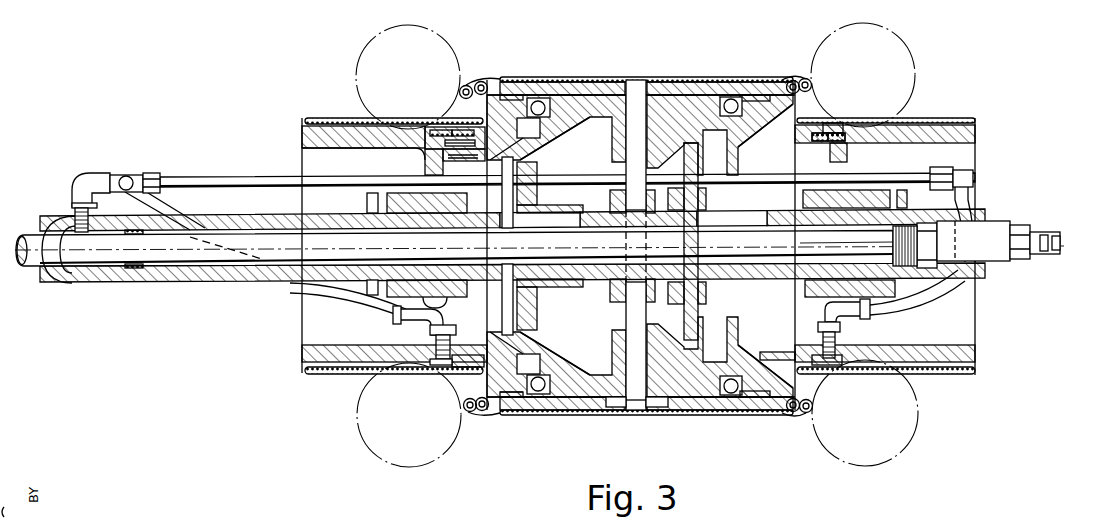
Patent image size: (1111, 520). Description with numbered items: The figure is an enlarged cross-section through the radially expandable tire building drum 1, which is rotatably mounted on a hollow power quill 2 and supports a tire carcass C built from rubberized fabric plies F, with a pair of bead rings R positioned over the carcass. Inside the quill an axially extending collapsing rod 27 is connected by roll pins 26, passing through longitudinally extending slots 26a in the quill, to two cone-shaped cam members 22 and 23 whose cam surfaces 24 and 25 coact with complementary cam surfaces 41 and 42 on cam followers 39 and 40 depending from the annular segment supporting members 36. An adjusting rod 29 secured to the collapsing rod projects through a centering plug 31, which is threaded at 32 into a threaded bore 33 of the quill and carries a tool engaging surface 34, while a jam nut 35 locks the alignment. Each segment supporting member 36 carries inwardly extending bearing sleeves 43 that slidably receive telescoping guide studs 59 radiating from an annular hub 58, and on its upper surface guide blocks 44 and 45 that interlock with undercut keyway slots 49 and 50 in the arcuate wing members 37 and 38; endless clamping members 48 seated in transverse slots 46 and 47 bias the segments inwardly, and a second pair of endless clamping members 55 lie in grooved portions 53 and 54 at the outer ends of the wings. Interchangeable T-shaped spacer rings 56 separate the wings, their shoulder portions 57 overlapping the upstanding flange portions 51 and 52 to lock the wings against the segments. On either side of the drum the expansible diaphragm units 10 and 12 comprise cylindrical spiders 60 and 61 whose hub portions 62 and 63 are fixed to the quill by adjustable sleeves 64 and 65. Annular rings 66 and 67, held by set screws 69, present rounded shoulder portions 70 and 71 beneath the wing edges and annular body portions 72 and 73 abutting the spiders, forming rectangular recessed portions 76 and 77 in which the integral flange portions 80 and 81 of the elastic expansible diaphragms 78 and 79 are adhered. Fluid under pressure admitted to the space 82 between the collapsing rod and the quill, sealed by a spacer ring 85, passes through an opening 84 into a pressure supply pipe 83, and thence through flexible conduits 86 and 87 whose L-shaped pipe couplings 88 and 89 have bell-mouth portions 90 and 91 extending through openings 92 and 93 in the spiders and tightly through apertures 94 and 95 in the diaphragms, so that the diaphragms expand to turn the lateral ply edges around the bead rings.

The radially expandable drum 1 is at (678, 79).
The power quill 2 is at (160, 285).
The expansible diaphragm unit 10 is at (300, 136).
The expansible diaphragm unit 12 is at (976, 129).
The cam member 22 is at (545, 311).
The cam member 23 is at (728, 319).
The cam surface 24 is at (495, 157).
The cam surface 25 is at (690, 160).
The roll pin 26 is at (540, 165).
The longitudinally extending slot 26a is at (566, 221).
The collapsing rod 27 is at (240, 236).
The adjusting rod 29 is at (875, 232).
The centering plug 31 is at (998, 221).
The threaded end 32 is at (930, 224).
The threaded bore 33 is at (908, 226).
The tool engaging surface 34 is at (1055, 232).
The jam nut 35 is at (1024, 225).
The segment supporting member 36 is at (795, 103).
The arcuate wing member 37 is at (520, 82).
The arcuate wing member 38 is at (720, 82).
The cam follower 39 is at (575, 127).
The cam follower 40 is at (776, 118).
The complementary cam surface 41 is at (540, 344).
The complementary cam surface 42 is at (722, 351).
The bearing sleeve 43 is at (615, 151).
The guide block 44 is at (517, 410).
The guide block 45 is at (752, 411).
The slot 46 is at (548, 111).
The slot 47 is at (738, 108).
The endless clamping member 48 is at (730, 113).
The undercut keyway slot 49 is at (570, 110).
The undercut keyway slot 50 is at (720, 246).
The upstanding flange portion 51 is at (632, 408).
The upstanding flange portion 52 is at (652, 408).
The grooved portion 53 is at (478, 412).
The grooved portion 54 is at (790, 413).
The endless clamping member 55 is at (485, 81).
The spacer ring 56 is at (636, 81).
The shoulder portion 57 is at (613, 408).
The annular hub 58 is at (612, 293).
The telescoping guide stud 59 is at (650, 135).
The cylindrical spider 60 is at (302, 354).
The cylindrical spider 61 is at (976, 353).
The annular hub portion 62 is at (462, 297).
The annular hub portion 63 is at (843, 298).
The adjustable sleeve 64 is at (367, 204).
The adjustable sleeve 65 is at (918, 304).
The annular ring 66 is at (478, 131).
The annular ring 67 is at (793, 159).
The set screw 69 is at (436, 130).
The rounded shoulder portion 70 is at (484, 360).
The rounded shoulder portion 71 is at (800, 359).
The annular body portion 72 is at (458, 130).
The annular body portion 73 is at (842, 133).
The rectangular recessed portion 76 is at (462, 158).
The rectangular recessed portion 77 is at (820, 143).
The expansible diaphragm 78 is at (325, 375).
The expansible diaphragm 79 is at (942, 375).
The integral flange portion 80 is at (465, 140).
The integral flange portion 81 is at (826, 133).
The space 82 is at (104, 277).
The pressure supply pipe 83 is at (185, 177).
The opening 84 is at (72, 222).
The spacer ring 85 is at (134, 270).
The flexible conduit 86 is at (292, 287).
The flexible conduit 87 is at (964, 293).
The L-shaped pipe coupling 88 is at (420, 327).
The L-shaped pipe coupling 89 is at (845, 336).
The bell-mouth portion 90 is at (436, 354).
The bell-mouth portion 91 is at (848, 366).
The opening 92 is at (456, 331).
The opening 93 is at (824, 346).
The aperture 94 is at (432, 366).
The aperture 95 is at (836, 362).
The bead ring R is at (466, 84).
The tire carcass C is at (570, 81).
The fabric plies F is at (760, 82).